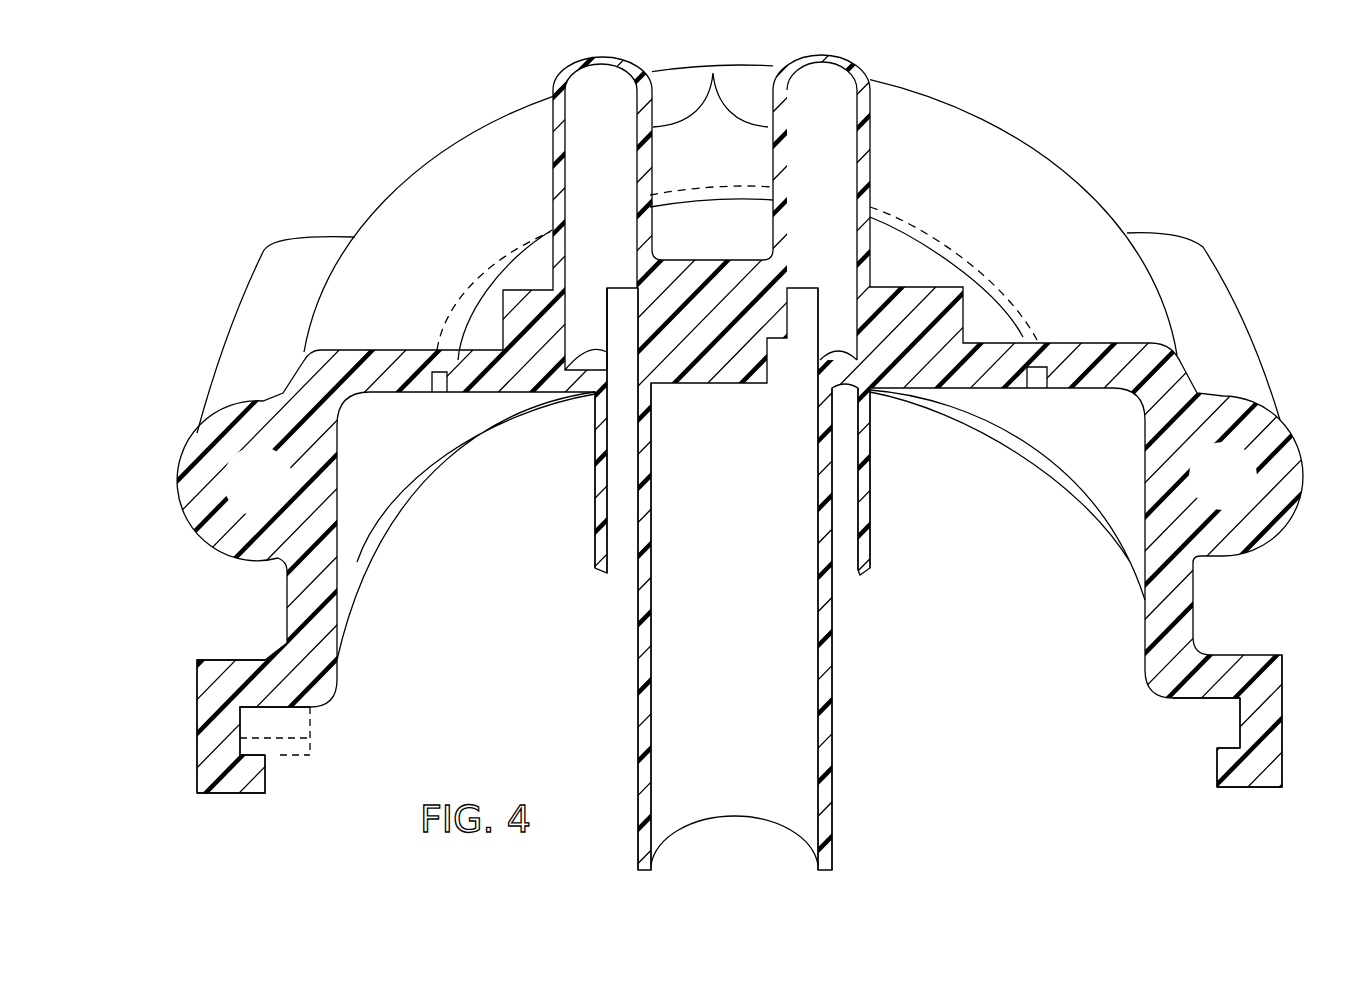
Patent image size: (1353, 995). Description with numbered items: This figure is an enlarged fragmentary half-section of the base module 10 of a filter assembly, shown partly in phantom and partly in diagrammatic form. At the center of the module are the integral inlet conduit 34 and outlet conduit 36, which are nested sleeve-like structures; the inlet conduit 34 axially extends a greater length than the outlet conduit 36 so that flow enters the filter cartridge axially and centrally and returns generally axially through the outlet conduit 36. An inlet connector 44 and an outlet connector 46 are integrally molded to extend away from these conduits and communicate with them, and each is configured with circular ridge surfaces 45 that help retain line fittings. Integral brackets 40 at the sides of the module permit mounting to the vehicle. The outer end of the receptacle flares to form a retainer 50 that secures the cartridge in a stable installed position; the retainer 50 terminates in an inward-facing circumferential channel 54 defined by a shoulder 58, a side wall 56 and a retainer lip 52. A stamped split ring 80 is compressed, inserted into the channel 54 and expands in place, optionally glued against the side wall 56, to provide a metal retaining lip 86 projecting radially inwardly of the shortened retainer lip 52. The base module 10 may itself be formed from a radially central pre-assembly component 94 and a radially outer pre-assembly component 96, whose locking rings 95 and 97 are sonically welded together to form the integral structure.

The base module 10 is at (376, 160).
The inlet conduit 34 is at (828, 750).
The outlet conduit 36 is at (868, 522).
The bracket 40 is at (267, 272).
The inlet connector 44 is at (852, 162).
The circular ridge surfaces 45 is at (713, 73).
The outlet connector 46 is at (552, 140).
The retainer 50 is at (195, 717).
The retainer lip 52 is at (1222, 742).
The circumferential channel 54 is at (1193, 733).
The side wall 56 is at (1207, 728).
The shoulder 58 is at (1200, 705).
The split ring 80 is at (297, 743).
The metal retaining lip 86 is at (310, 715).
The radially central pre-assembly component 94 is at (483, 330).
The locking ring 95 is at (1030, 380).
The radially outer pre-assembly component 96 is at (1058, 190).
The locking ring 97 is at (1013, 293).